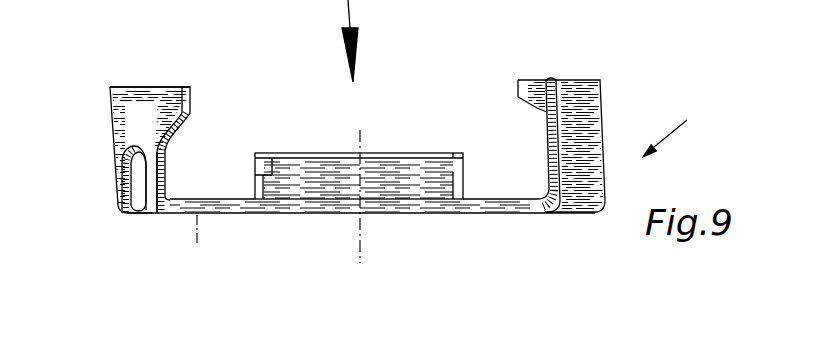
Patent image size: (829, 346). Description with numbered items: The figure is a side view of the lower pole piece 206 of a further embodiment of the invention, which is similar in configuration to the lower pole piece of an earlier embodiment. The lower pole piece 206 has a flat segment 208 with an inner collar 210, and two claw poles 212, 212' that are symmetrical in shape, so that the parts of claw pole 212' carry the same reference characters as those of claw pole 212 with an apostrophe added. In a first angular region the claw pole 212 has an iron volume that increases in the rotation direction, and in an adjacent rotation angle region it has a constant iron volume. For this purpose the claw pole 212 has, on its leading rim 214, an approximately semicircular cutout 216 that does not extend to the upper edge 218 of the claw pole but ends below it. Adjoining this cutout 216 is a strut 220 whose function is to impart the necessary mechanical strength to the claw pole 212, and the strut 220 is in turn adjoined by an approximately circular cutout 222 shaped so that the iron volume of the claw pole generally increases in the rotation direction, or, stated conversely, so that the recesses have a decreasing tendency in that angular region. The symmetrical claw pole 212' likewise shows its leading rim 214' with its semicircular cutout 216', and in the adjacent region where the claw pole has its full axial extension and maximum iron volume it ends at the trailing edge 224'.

The lower pole piece 206 is at (727, 107).
The flat segment 208 is at (502, 203).
The inner collar 210 is at (262, 155).
The claw pole 212 is at (119, 150).
The leading rim 214 is at (223, 98).
The semicircular cutout 216 is at (202, 163).
The upper edge 218 is at (147, 87).
The strut 220 is at (160, 167).
The circular cutout 222 is at (127, 188).
The claw pole 212' is at (588, 131).
The leading rim 214' is at (488, 96).
The semicircular cutout 216' is at (523, 146).
The trailing edge 224' is at (555, 52).